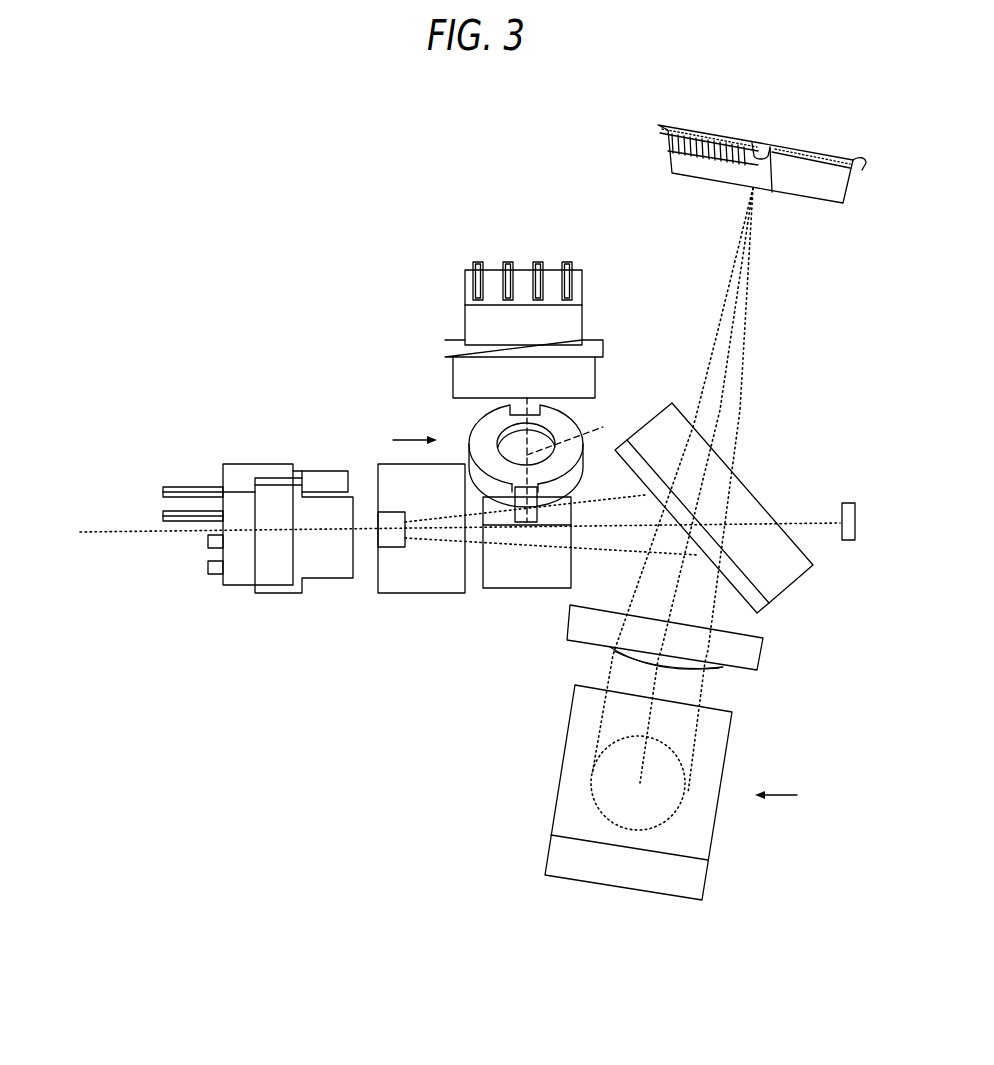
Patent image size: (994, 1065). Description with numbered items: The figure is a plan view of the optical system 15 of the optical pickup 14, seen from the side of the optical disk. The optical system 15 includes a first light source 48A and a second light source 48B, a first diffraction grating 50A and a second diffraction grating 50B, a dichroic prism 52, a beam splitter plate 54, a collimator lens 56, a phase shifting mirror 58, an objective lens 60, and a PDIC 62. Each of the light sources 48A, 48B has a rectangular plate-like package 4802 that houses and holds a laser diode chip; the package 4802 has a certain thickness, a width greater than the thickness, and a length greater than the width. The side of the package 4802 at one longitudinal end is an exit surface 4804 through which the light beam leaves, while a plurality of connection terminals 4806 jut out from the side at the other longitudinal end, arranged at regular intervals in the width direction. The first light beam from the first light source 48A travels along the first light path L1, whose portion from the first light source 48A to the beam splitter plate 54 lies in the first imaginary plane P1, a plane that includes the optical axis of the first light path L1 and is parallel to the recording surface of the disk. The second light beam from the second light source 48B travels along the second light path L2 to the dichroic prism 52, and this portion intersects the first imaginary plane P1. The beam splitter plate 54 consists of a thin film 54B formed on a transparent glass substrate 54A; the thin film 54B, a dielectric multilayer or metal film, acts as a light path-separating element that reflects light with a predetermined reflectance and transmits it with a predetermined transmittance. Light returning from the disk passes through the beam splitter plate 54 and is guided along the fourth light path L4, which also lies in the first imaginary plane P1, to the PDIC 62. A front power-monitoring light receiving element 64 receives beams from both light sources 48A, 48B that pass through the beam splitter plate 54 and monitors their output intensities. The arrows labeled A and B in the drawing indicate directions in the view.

The optical pickup 14 is at (267, 197).
The optical system 15 is at (480, 512).
The first light source 48A is at (365, 430).
The second light source 48B is at (454, 311).
The package 4802 is at (258, 463).
The exit surface 4804 is at (352, 471).
The connection terminals 4806 is at (163, 517).
The first diffraction grating 50A is at (423, 594).
The second diffraction grating 50B is at (567, 417).
The dichroic prism 52 is at (522, 578).
The beam splitter plate 54 is at (751, 522).
The transparent glass substrate 54A is at (780, 566).
The thin film 54B is at (725, 593).
The collimator lens 56 is at (742, 657).
The phase shifting mirror 58 is at (735, 740).
The objective lens 60 is at (680, 807).
The PDIC 62 is at (840, 186).
The front power-monitoring light receiving element 64 is at (841, 507).
The first light path L1 is at (425, 530).
The second light path L2 is at (578, 436).
The fourth light path L4 is at (728, 355).
The first imaginary plane P1 is at (107, 532).
The direction A is at (405, 443).
The direction B is at (785, 796).